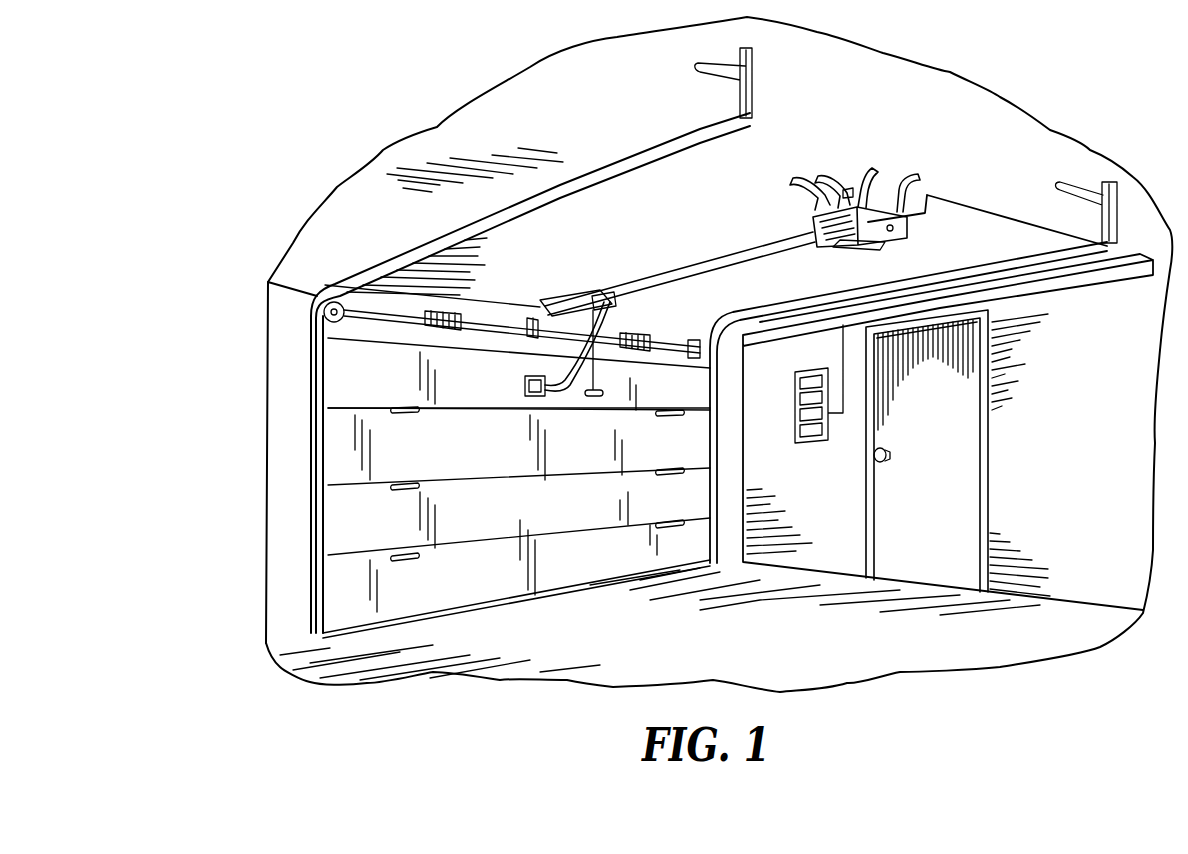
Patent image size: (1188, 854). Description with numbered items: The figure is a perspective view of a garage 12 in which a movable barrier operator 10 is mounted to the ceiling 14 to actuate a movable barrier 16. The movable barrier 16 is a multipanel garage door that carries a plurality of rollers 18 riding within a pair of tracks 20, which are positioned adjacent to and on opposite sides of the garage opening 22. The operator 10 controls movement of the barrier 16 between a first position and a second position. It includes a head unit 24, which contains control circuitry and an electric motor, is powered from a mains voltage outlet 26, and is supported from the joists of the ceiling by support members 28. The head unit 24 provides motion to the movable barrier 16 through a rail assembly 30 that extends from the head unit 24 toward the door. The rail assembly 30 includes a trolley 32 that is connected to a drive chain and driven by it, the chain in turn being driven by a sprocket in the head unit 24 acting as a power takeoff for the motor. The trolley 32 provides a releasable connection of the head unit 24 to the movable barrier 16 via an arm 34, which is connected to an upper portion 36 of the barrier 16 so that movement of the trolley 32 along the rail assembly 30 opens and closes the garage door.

The movable barrier operator 10 is at (744, 243).
The garage 12 is at (273, 312).
The ceiling 14 is at (987, 122).
The movable barrier 16 is at (568, 570).
The rollers 18 is at (719, 503).
The tracks 20 is at (313, 554).
The garage opening 22 is at (680, 558).
The head unit 24 is at (898, 232).
The mains voltage outlet 26 is at (846, 186).
The support members 28 is at (905, 187).
The rail assembly 30 is at (661, 272).
The trolley 32 is at (640, 304).
The arm 34 is at (566, 372).
The upper portion 36 is at (482, 400).